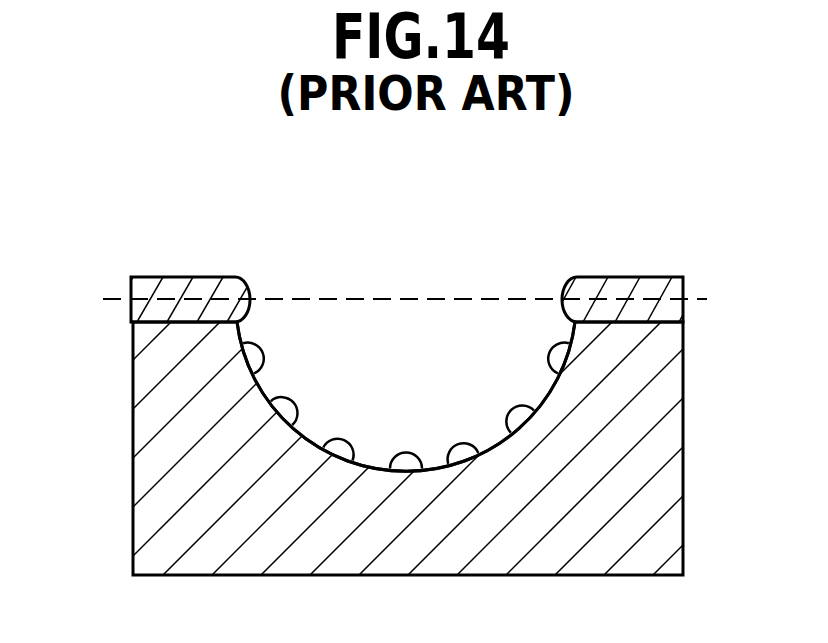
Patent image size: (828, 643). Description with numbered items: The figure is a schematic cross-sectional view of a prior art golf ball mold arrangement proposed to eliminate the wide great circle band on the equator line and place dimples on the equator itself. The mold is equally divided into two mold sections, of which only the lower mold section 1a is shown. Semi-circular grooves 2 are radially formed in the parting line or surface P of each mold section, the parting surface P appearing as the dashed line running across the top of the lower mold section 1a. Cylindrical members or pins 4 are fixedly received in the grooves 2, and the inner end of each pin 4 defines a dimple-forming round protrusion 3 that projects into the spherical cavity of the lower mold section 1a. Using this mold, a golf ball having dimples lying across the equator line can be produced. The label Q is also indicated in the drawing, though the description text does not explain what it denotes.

The lower mold section 1a is at (665, 433).
The semi-circular grooves 2 is at (628, 322).
The dimple-forming round protrusion 3 is at (402, 458).
The cylindrical members or pins 4 is at (623, 278).
The parting line or surface P is at (310, 298).
The reference point Q is at (109, 302).